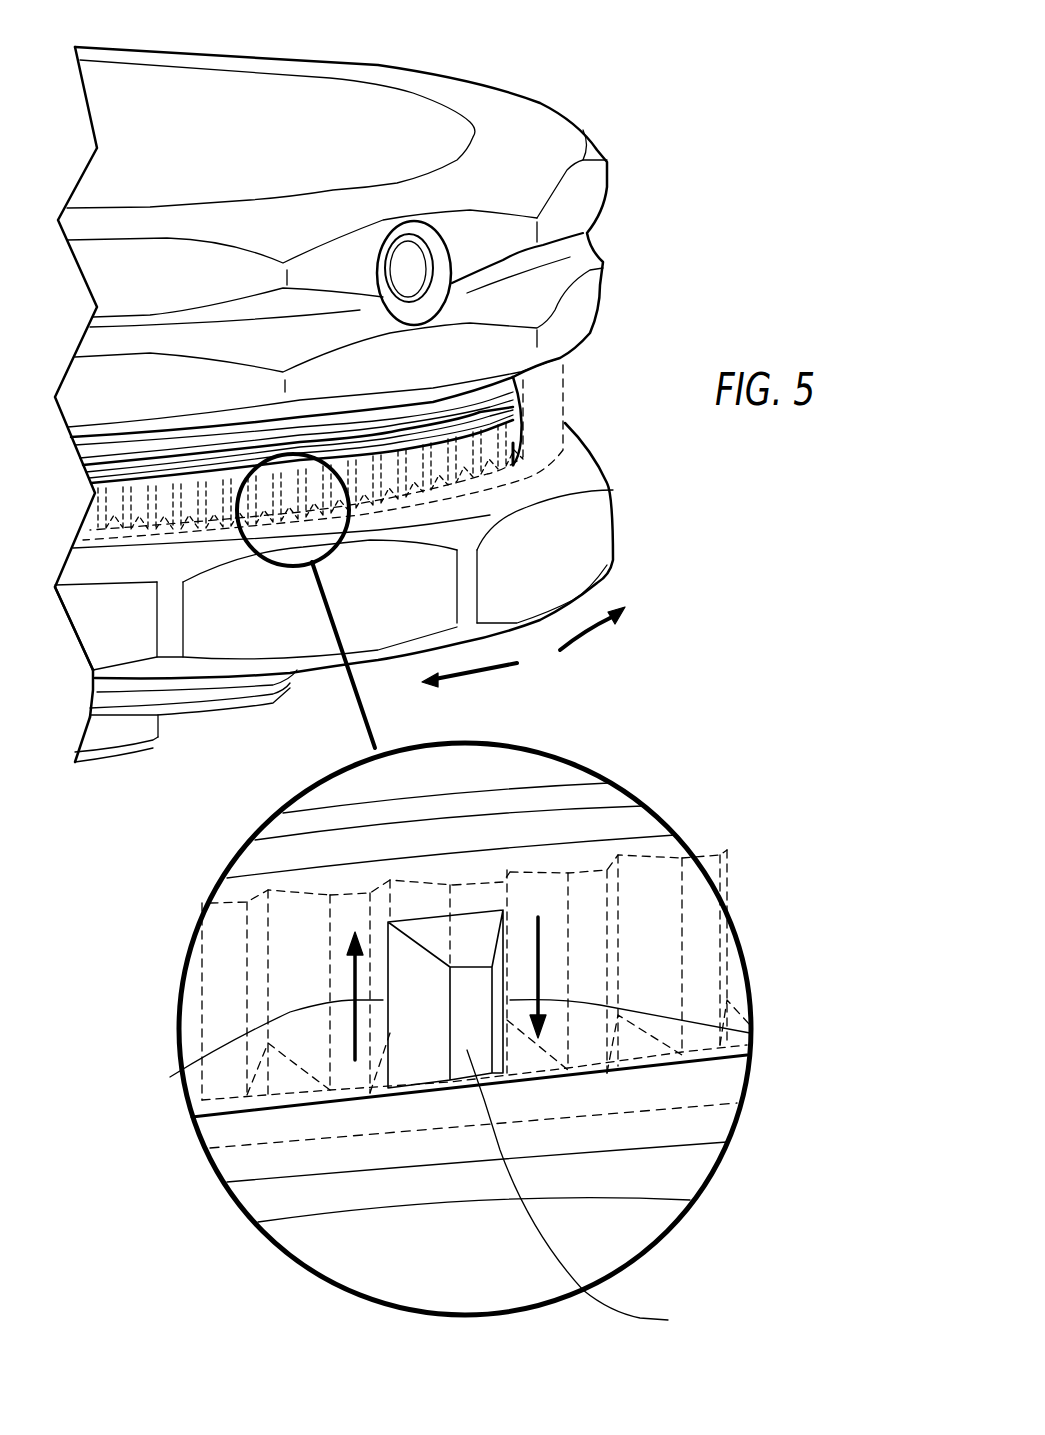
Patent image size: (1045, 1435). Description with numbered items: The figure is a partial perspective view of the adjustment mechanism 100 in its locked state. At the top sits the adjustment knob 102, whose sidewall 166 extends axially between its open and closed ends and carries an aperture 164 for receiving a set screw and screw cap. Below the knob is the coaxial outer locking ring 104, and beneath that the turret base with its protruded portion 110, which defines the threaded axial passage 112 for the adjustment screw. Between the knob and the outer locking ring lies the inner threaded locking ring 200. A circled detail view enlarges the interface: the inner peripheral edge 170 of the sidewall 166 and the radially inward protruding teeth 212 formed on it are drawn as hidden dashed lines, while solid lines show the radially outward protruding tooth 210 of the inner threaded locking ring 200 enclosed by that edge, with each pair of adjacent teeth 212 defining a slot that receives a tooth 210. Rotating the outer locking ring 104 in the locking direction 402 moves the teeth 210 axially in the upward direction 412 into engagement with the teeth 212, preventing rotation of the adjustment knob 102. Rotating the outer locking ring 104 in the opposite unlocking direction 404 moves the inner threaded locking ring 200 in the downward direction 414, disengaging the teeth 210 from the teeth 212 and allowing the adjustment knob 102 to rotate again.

The adjustment mechanism 100 is at (602, 52).
The adjustment knob 102 is at (603, 287).
The outer locking ring 104 is at (613, 517).
The protruded portion 110 is at (222, 693).
The threaded axial passage 112 is at (132, 737).
The aperture 164 is at (413, 220).
The sidewall 166 is at (589, 212).
The inner peripheral edge 170 is at (587, 870).
The inner threaded locking ring 200 is at (540, 410).
The tooth 210 is at (424, 880).
The teeth 212 is at (587, 970).
The locking direction 402 is at (587, 642).
The unlocking direction 404 is at (497, 670).
The upward direction 412 is at (170, 1077).
The downward direction 414 is at (750, 1033).